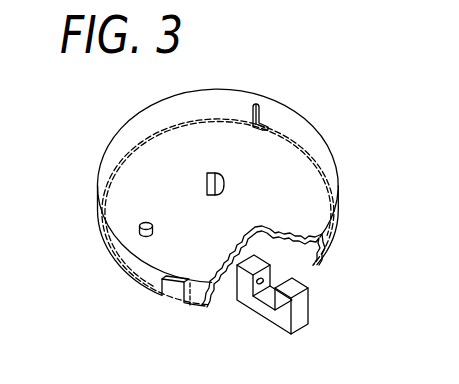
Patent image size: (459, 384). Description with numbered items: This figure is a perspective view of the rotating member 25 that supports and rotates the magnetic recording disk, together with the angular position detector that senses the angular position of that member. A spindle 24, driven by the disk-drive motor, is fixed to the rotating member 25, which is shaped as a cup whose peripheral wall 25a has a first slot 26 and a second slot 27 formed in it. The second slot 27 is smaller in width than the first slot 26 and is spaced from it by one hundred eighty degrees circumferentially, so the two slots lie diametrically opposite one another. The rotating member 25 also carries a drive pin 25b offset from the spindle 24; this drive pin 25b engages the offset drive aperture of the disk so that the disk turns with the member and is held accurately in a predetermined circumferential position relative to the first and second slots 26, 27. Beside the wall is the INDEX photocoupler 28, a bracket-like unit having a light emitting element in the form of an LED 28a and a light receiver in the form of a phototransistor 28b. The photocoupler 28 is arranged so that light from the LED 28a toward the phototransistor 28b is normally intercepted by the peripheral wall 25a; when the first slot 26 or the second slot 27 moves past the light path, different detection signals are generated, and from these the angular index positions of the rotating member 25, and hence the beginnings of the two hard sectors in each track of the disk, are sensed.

The spindle 24 is at (225, 184).
The rotating member 25 is at (96, 164).
The peripheral wall 25a is at (323, 240).
The drive pin 25b is at (143, 237).
The first slot 26 is at (172, 296).
The second slot 27 is at (268, 114).
The INDEX photocoupler 28 is at (306, 328).
The LED 28a is at (283, 297).
The phototransistor 28b is at (257, 283).